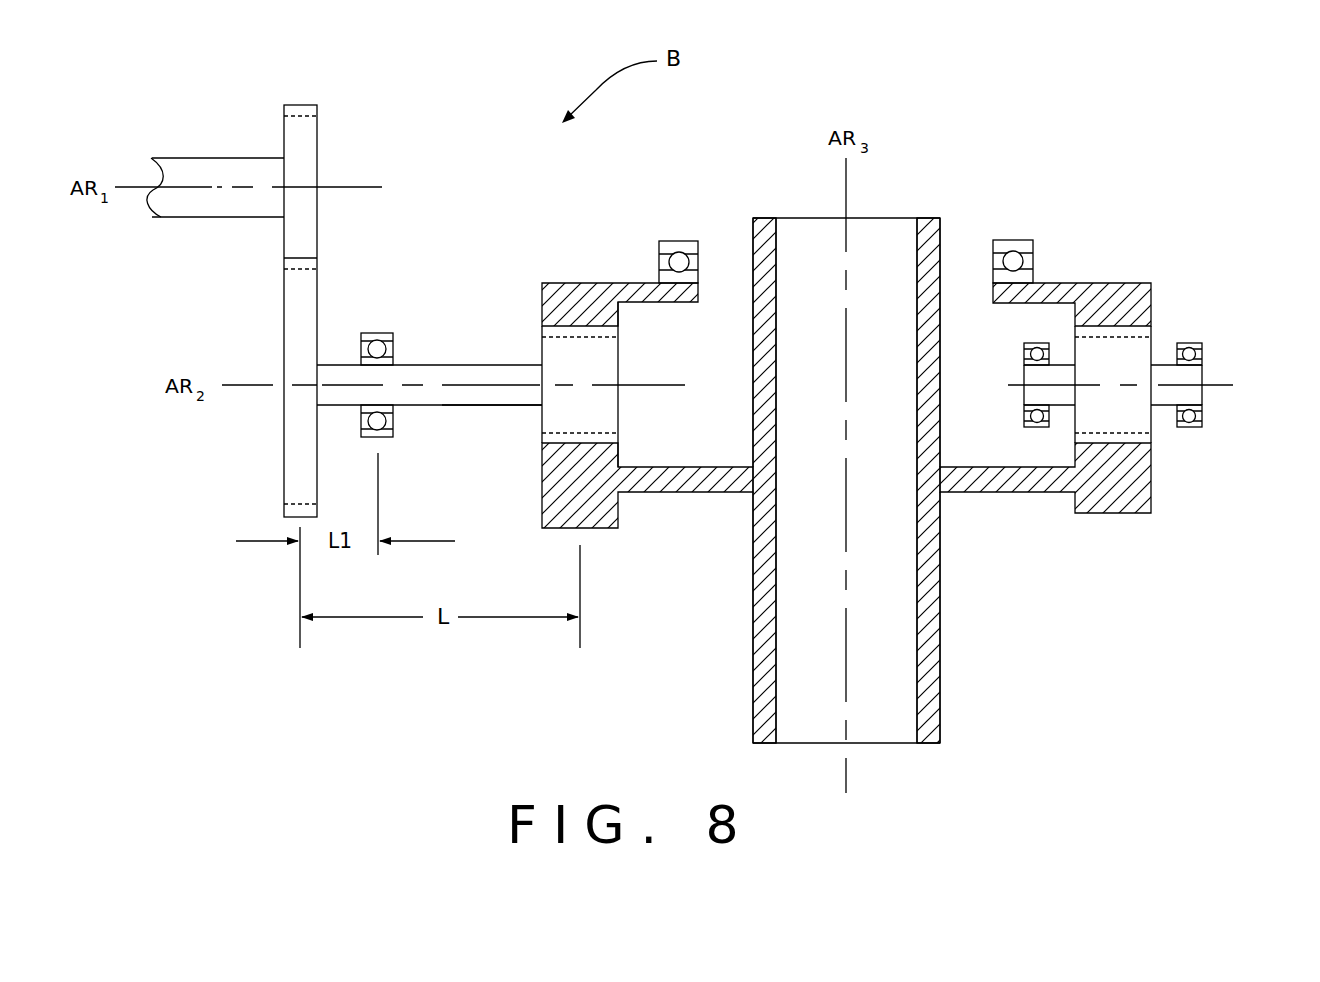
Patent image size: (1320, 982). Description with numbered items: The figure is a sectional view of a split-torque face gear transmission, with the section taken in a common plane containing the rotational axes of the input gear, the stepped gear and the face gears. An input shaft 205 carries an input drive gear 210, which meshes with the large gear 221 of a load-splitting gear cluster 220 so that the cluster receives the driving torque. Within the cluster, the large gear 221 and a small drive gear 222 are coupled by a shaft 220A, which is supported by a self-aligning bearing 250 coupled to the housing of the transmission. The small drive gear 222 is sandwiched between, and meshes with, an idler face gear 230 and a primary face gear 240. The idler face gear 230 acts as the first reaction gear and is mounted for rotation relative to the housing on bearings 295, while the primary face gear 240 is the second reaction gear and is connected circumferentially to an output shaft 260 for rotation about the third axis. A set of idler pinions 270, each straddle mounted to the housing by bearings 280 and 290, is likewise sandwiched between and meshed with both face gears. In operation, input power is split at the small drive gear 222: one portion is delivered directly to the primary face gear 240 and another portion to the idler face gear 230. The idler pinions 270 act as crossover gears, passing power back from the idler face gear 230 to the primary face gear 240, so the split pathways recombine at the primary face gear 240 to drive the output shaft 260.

The input shaft 205 is at (177, 175).
The input drive gear 210 is at (318, 108).
The load-splitting gear cluster 220 is at (442, 364).
The shaft 220A is at (461, 394).
The large gear 221 is at (294, 483).
The small drive gear 222 is at (607, 365).
The idler face gear 230 is at (553, 282).
The primary face gear 240 is at (616, 528).
The self-aligning bearing 250 is at (369, 333).
The output shaft 260 is at (941, 731).
The idler pinion 270 is at (1145, 425).
The bearing 280 is at (1197, 341).
The bearing 290 is at (1025, 343).
The bearing 295 is at (1033, 240).